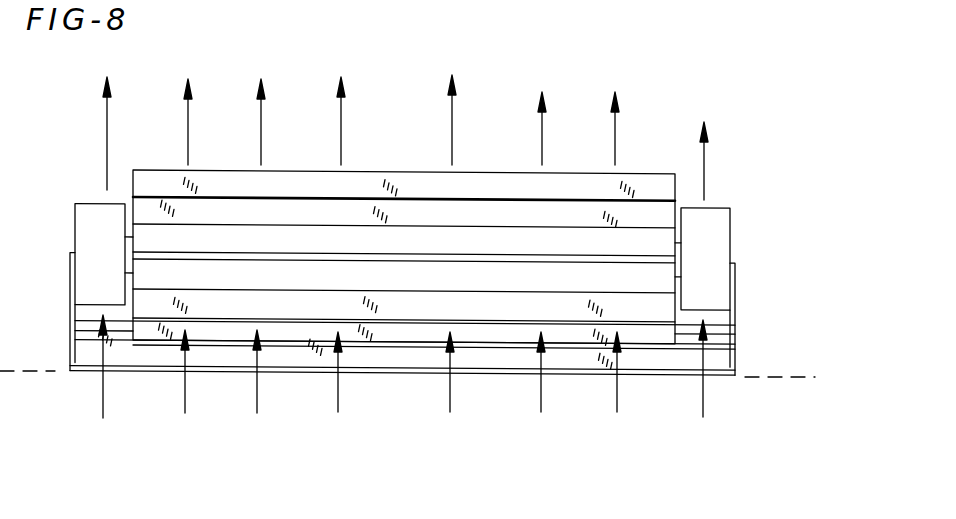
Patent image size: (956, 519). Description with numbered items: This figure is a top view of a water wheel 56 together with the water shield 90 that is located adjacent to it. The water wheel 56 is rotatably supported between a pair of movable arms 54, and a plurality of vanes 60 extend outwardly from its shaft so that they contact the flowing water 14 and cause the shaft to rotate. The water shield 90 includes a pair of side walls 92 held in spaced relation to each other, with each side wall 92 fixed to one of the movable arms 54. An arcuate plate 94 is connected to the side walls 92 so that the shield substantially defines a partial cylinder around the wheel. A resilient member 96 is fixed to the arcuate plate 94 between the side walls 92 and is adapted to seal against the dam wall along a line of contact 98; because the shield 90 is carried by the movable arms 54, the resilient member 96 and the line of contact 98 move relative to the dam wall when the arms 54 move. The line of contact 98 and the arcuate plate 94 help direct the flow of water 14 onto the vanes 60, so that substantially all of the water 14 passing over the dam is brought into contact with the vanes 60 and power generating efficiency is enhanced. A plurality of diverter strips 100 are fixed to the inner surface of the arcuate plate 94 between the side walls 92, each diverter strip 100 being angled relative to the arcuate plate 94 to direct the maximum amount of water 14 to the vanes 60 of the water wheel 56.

The flowing water 14 is at (258, 395).
The movable arm 54 is at (83, 208).
The water wheel 56 is at (465, 238).
The vanes 60 is at (258, 210).
The water shield 90 is at (503, 372).
The side walls 92 is at (73, 267).
The arcuate plate 94 is at (208, 352).
The resilient member 96 is at (602, 372).
The line of contact 98 is at (720, 374).
The diverter strips 100 is at (735, 356).